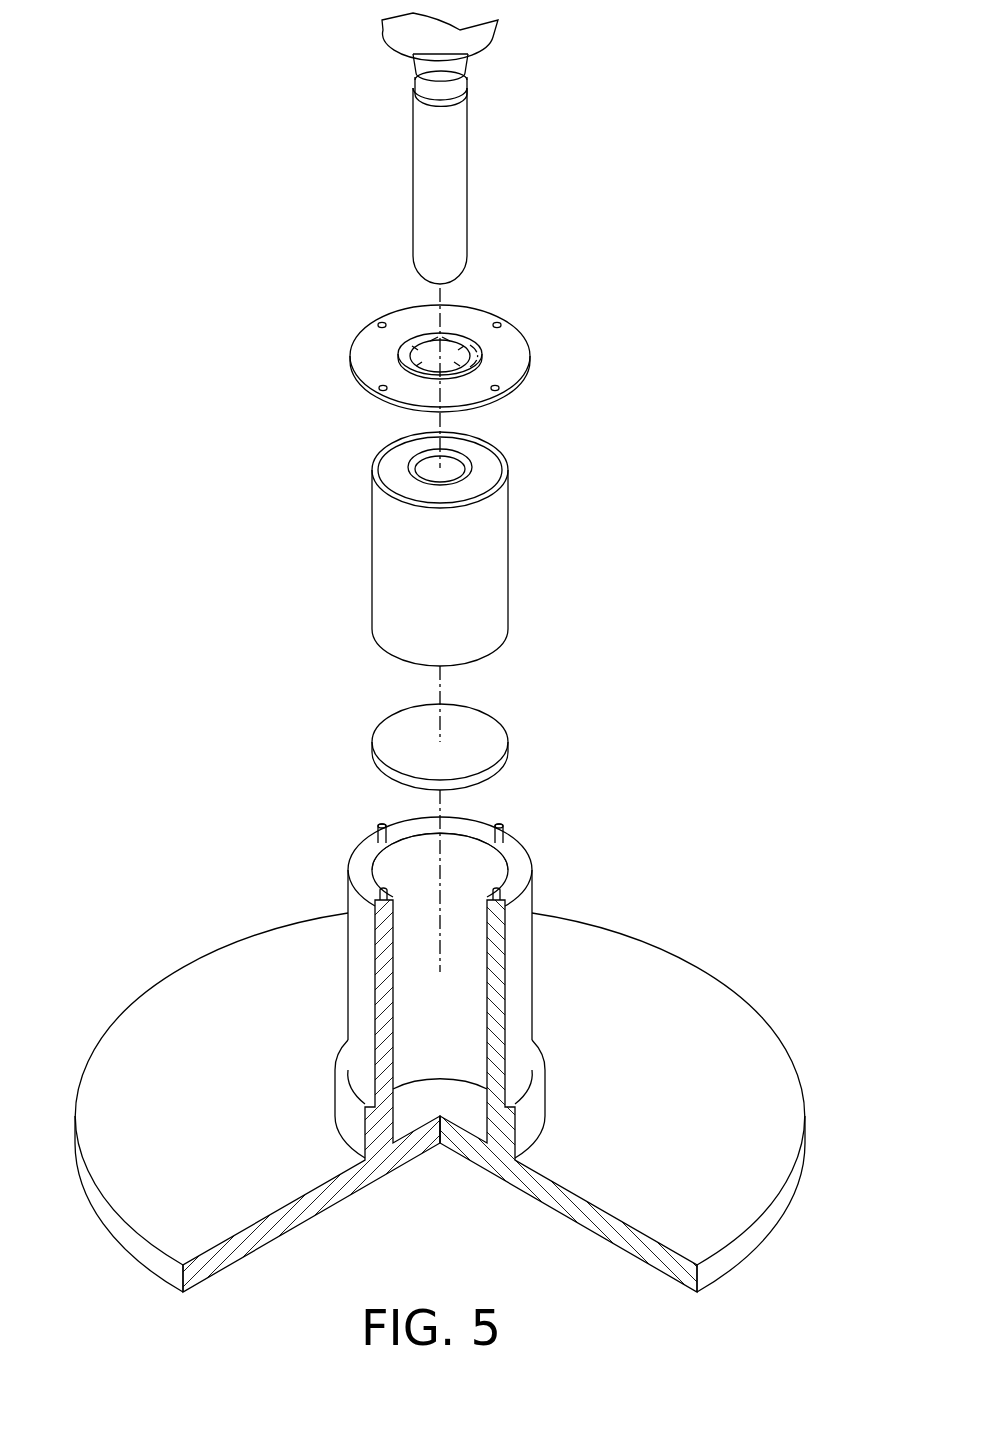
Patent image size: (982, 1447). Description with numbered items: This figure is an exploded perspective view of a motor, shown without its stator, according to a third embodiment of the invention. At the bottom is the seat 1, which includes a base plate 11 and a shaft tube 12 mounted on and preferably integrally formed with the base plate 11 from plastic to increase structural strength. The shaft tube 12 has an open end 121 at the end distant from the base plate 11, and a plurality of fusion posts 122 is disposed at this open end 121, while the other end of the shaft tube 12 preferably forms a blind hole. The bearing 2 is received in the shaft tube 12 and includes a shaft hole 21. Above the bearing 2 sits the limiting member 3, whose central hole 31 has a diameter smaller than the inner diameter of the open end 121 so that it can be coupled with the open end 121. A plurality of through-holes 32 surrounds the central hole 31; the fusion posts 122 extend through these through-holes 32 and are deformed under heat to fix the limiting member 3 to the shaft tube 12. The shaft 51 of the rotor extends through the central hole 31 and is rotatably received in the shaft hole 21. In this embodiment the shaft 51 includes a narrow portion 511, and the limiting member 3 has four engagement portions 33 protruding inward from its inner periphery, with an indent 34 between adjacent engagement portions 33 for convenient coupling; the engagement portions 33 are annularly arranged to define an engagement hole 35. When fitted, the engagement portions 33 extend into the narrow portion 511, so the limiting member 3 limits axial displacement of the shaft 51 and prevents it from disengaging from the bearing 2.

The seat 1 is at (434, 1023).
The base plate 11 is at (693, 1008).
The shaft tube 12 is at (527, 980).
The open end 121 is at (363, 858).
The fusion posts 122 is at (379, 897).
The bearing 2 is at (492, 578).
The shaft hole 21 is at (457, 472).
The limiting member 3 is at (367, 345).
The central hole 31 is at (480, 352).
The through-holes 32 is at (502, 324).
The engagement portion 33 is at (407, 352).
The indent 34 is at (478, 367).
The engagement hole 35 is at (452, 345).
The shaft 51 is at (456, 185).
The narrow portion 511 is at (465, 80).